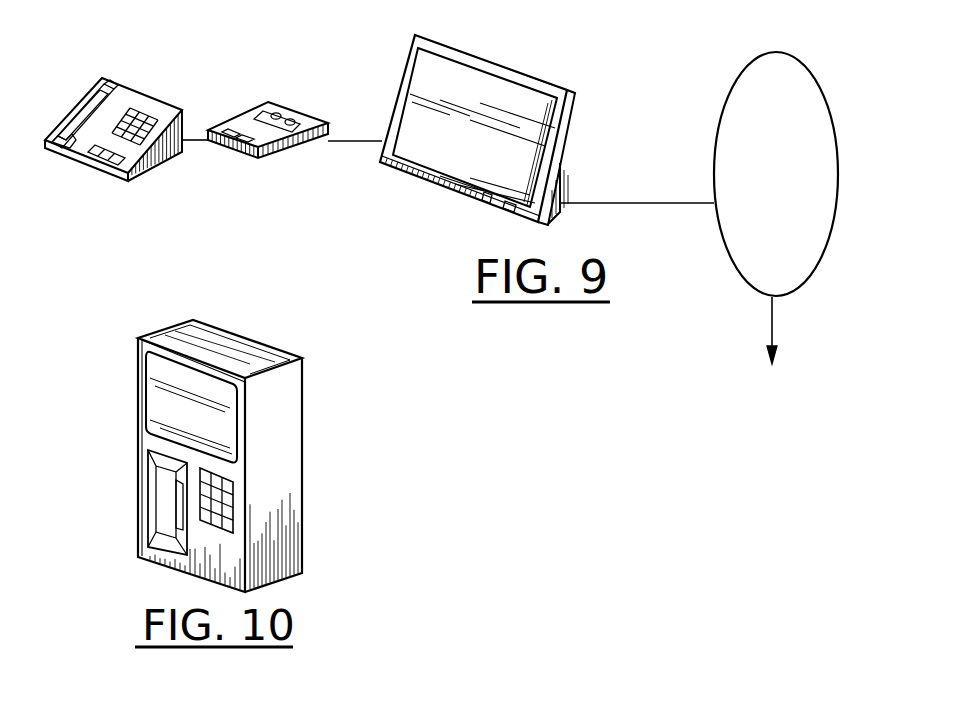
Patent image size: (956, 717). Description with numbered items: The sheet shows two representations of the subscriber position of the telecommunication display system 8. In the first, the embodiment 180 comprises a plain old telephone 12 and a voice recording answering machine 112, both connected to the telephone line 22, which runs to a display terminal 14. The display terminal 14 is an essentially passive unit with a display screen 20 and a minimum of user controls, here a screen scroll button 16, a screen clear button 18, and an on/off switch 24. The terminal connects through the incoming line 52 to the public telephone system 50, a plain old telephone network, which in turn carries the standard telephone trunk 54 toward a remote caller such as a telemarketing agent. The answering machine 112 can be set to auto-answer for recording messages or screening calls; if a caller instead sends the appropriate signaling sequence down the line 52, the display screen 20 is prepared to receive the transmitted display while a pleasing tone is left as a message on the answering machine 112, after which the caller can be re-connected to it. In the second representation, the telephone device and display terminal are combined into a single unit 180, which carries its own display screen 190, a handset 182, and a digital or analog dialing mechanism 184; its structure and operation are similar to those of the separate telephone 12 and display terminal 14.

In FIG. 9, the telecommunication display system 8 is at (125, 58).
In FIG. 9, the telephone 12 is at (85, 163).
In FIG. 9, the display terminal 14 is at (410, 53).
In FIG. 9, the screen scroll button 16 is at (487, 198).
In FIG. 9, the screen clear button 18 is at (510, 210).
In FIG. 9, the display screen 20 is at (483, 102).
In FIG. 9, the telephone line 22 is at (195, 140).
In FIG. 9, the on/off switch 24 is at (563, 185).
In FIG. 9, the public telephone system 50 is at (794, 268).
In FIG. 9, the line 52 is at (692, 203).
In FIG. 9, the standard telephone trunk 54 is at (773, 323).
In FIG. 9, the voice recording answering machine 112 is at (278, 103).
In FIG. 9, the embodiment 180 is at (326, 205).
In FIG. 10, the embodiment 180 is at (157, 333).
In FIG. 10, the handset 182 is at (155, 500).
In FIG. 10, the dialing mechanism 184 is at (233, 517).
In FIG. 10, the display screen 190 is at (153, 380).